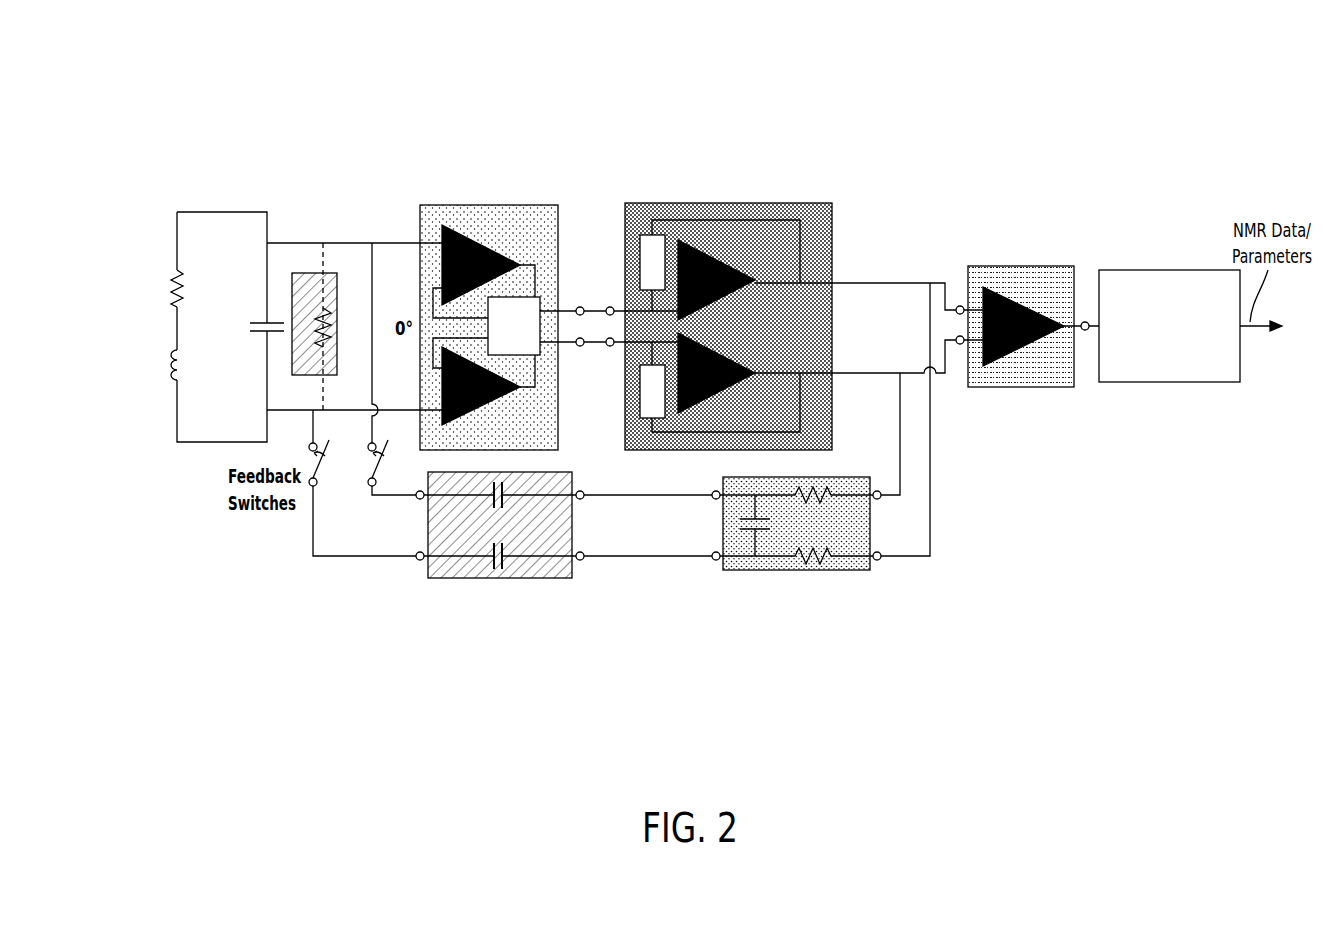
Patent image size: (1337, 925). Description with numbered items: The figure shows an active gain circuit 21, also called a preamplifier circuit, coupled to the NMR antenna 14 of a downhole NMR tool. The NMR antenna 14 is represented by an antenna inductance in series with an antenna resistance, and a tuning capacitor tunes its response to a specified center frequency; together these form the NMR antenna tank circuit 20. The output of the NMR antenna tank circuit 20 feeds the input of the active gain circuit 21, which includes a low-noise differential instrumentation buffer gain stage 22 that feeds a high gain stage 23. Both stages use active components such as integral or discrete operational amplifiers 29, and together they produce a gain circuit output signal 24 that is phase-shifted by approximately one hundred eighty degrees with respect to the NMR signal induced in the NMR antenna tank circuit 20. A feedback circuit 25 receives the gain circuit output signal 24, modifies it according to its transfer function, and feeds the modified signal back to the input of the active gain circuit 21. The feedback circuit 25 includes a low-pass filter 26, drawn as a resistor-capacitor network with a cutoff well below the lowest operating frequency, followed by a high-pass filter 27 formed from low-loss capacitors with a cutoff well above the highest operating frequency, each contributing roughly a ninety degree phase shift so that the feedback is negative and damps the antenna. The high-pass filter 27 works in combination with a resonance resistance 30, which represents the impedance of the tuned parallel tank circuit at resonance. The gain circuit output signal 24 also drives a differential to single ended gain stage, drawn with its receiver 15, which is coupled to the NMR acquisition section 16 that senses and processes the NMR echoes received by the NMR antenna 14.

The NMR antenna 14 is at (162, 397).
The receiver / gain stage differential to single ended 15 is at (994, 500).
The NMR acquisition section 16 is at (1110, 268).
The NMR antenna tank circuit 20 is at (177, 198).
The active gain circuit 21 is at (860, 108).
The low-noise differential instrumentation buffer gain stage 22 is at (559, 216).
The high gain stage 23 is at (832, 226).
The gain circuit output signal 24 is at (893, 283).
The feedback circuit 25 is at (293, 672).
The low-pass filter 26 is at (872, 568).
The high-pass filter 27 is at (427, 569).
The operational amplifiers 29 is at (500, 392).
The resonance resistance 30 is at (328, 306).